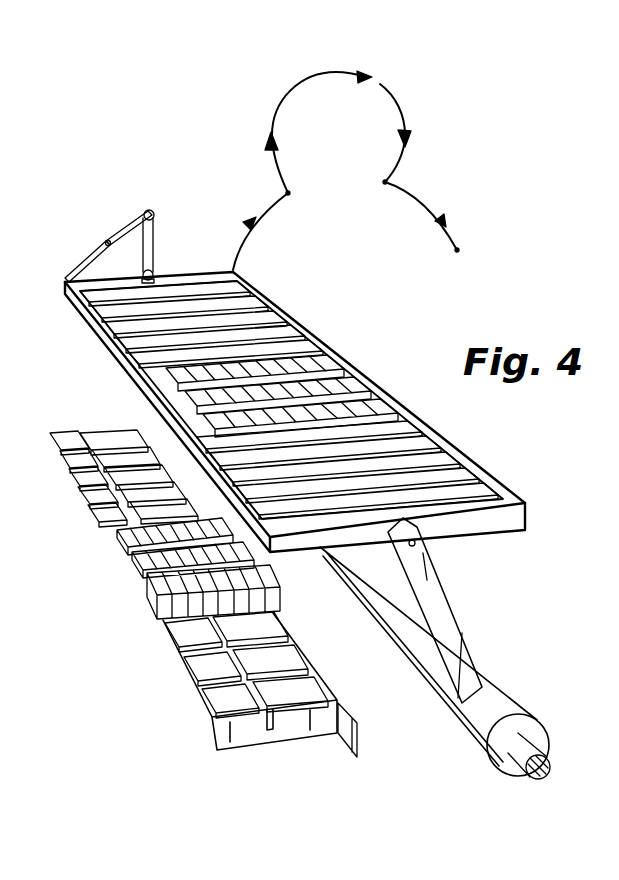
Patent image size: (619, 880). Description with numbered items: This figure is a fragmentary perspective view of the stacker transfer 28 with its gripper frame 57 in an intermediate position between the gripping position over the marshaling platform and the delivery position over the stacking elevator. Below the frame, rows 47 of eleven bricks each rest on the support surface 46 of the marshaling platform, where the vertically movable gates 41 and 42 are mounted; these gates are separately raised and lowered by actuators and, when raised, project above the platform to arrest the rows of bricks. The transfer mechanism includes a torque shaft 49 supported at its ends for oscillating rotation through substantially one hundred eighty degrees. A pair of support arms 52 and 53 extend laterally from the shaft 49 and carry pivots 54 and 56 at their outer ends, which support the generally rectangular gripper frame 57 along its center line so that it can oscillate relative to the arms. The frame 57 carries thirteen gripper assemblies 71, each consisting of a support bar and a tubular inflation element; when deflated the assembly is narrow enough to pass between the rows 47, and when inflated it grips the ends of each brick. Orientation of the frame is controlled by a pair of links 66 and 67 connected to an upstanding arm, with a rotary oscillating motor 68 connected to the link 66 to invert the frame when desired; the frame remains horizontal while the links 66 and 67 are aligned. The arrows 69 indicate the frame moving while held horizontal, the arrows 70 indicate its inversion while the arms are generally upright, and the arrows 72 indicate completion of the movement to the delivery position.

The stacker transfer 28 is at (308, 412).
The gate 41 is at (358, 733).
The gate 42 is at (237, 667).
The support surface 46 is at (183, 650).
The row 47 is at (127, 543).
The torque shaft 49 is at (503, 687).
The support arm 52 is at (440, 598).
The support arm 53 is at (156, 278).
The pivot 54 is at (418, 543).
The pivot 56 is at (154, 268).
The gripper frame 57 is at (120, 358).
The link 66 is at (110, 238).
The link 67 is at (85, 262).
The rotary oscillating motor 68 is at (148, 212).
The arrows 69 is at (425, 200).
The arrows 70 is at (318, 80).
The gripper assembly 71 is at (280, 325).
The arrows 72 is at (263, 204).